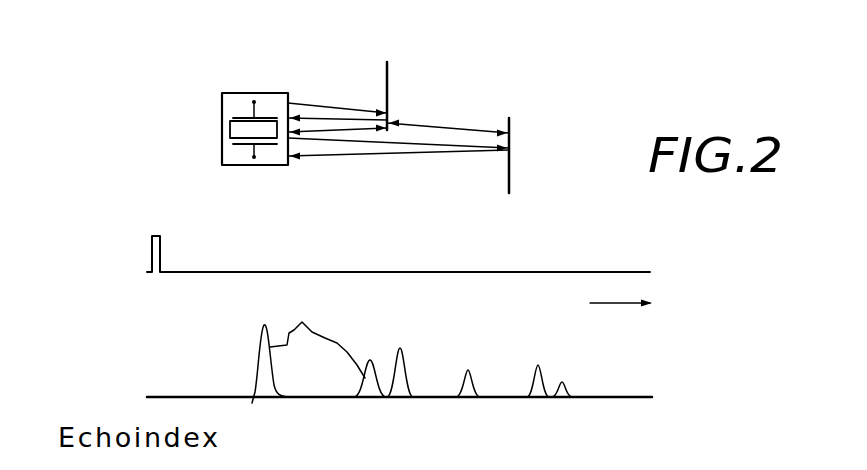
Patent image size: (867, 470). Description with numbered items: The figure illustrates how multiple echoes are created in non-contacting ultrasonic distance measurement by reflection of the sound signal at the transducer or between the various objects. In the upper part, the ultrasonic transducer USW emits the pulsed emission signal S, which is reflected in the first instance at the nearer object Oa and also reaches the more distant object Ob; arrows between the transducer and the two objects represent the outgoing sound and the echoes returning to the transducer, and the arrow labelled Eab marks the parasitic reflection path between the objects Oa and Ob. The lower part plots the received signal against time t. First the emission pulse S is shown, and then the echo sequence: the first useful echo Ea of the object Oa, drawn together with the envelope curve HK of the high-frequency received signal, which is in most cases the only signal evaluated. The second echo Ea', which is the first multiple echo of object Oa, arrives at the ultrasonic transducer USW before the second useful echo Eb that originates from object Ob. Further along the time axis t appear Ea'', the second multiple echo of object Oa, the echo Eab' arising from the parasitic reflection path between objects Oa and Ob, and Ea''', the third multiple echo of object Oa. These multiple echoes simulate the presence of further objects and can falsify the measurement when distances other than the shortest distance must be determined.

The ultrasonic transducer USW is at (237, 157).
The object Oa is at (387, 79).
The object Ob is at (533, 158).
The first useful echo Ea is at (306, 232).
The second echo Ea' is at (343, 256).
The parasitic reflection path Eab is at (448, 104).
The second useful echo Eb is at (366, 151).
The emission signal S is at (162, 245).
The envelope curve signal HK is at (317, 332).
The second multiple echo Ea'' is at (477, 369).
The parasitic reflection echo Eab' is at (547, 359).
The third multiple echo Ea''' is at (582, 377).
The time axis t is at (621, 291).